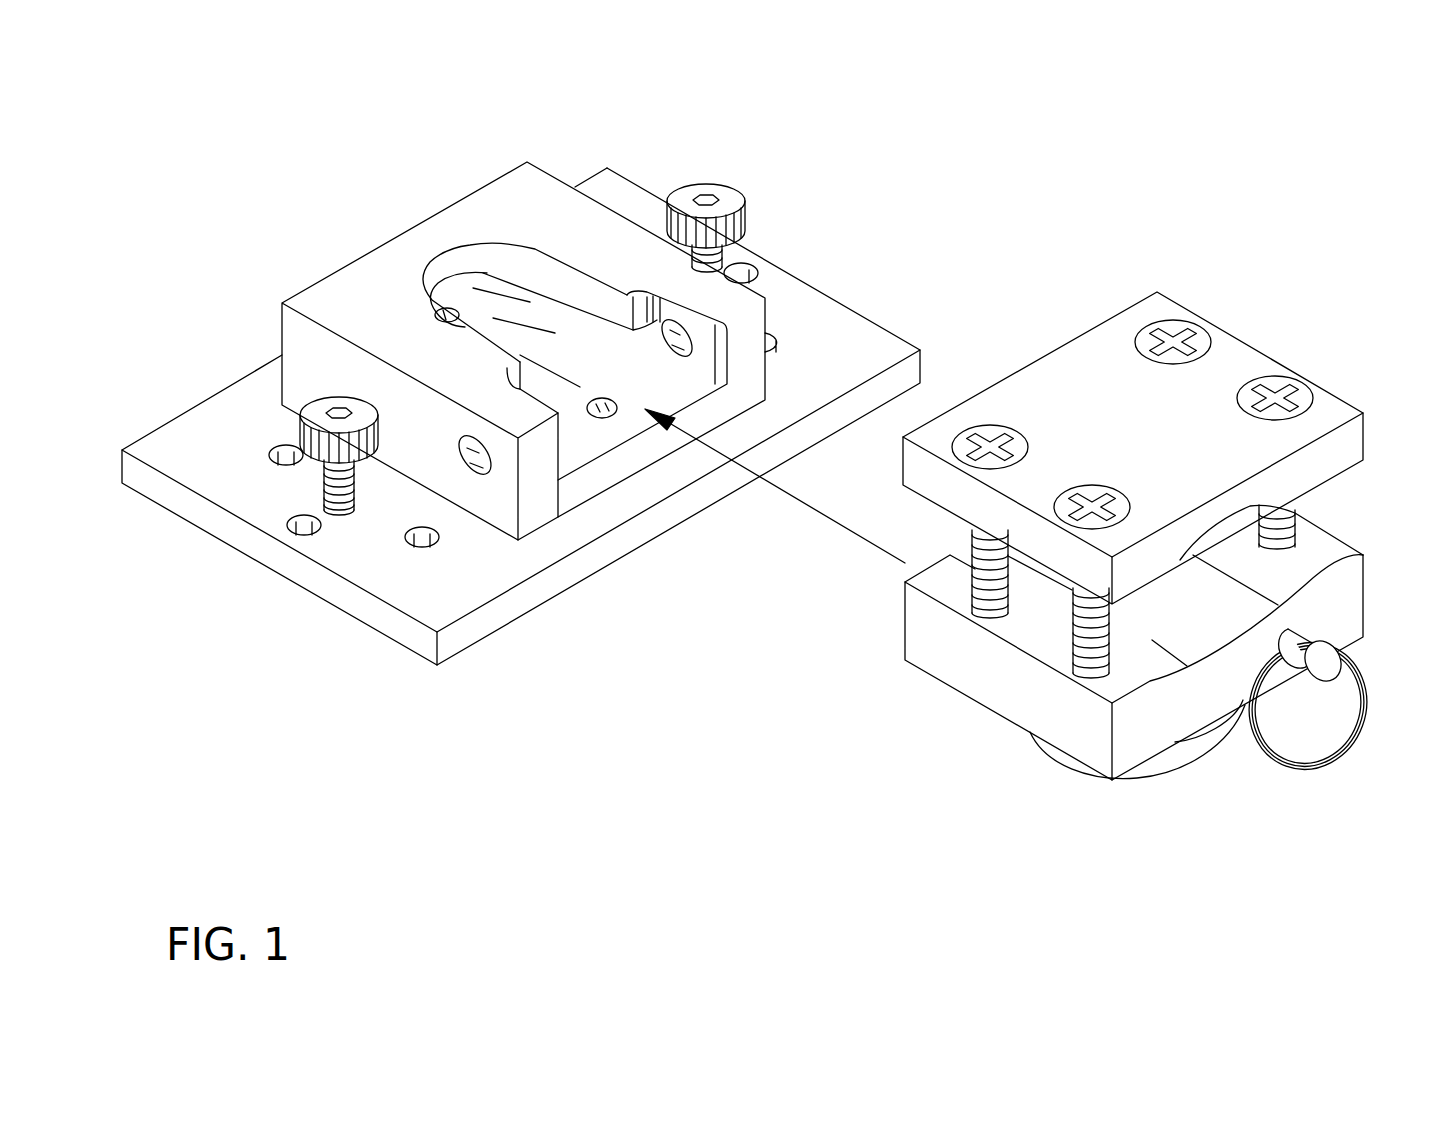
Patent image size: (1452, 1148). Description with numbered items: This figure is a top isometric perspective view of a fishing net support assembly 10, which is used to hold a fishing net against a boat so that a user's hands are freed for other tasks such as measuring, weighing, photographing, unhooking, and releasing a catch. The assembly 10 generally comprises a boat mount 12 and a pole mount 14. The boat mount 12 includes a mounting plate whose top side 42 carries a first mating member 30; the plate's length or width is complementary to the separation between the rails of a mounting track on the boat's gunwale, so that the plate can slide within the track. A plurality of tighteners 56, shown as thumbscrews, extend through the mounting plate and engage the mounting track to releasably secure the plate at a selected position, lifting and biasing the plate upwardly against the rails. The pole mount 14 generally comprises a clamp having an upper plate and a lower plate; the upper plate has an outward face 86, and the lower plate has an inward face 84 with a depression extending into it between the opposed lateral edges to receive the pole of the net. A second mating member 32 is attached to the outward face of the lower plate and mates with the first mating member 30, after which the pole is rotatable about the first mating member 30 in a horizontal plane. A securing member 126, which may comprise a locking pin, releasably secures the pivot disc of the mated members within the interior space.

The fishing net support assembly 10 is at (787, 453).
The boat mount 12 is at (521, 460).
The pole mount 14 is at (1177, 579).
The first mating member 30 is at (388, 237).
The second mating member 32 is at (1186, 774).
The top side 42 is at (473, 565).
The tightener 56 is at (322, 403).
The inward face 84 is at (1134, 642).
The outward face 86 is at (1122, 443).
The securing member 126 is at (1322, 660).